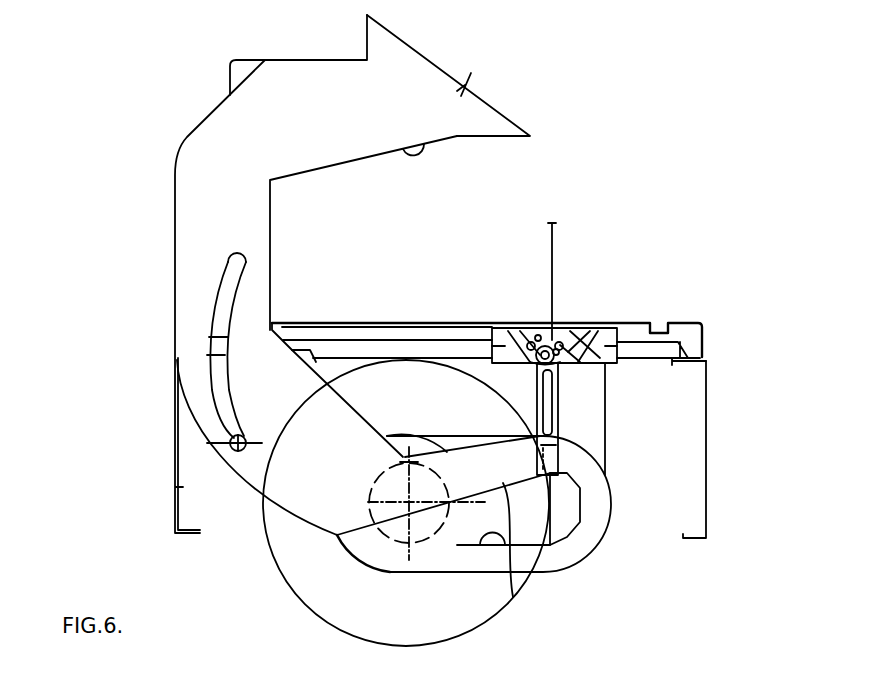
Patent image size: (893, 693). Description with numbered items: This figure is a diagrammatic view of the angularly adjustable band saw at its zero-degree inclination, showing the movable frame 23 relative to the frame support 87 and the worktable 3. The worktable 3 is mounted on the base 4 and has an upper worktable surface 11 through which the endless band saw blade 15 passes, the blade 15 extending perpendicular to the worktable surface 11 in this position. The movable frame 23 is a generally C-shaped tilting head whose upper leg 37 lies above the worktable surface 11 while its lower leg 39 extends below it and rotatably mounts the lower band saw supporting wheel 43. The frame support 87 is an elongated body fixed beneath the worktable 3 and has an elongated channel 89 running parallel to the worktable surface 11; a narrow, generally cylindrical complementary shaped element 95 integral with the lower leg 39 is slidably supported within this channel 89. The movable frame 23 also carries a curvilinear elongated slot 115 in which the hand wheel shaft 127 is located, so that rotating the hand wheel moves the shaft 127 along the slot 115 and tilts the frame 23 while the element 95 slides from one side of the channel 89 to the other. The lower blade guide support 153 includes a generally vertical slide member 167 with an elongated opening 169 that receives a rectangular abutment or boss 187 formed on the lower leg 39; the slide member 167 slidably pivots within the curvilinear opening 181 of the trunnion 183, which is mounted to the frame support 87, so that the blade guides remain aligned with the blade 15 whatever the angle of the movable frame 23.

The worktable 3 is at (706, 334).
The base 4 is at (709, 472).
The worktable surface 11 is at (645, 322).
The endless band saw blade 15 is at (553, 233).
The movable frame 23 is at (213, 157).
The upper leg 37 is at (438, 105).
The lower leg 39 is at (507, 479).
The lower band saw supporting wheel 43 is at (453, 622).
The frame support 87 is at (584, 546).
The elongated channel 89 is at (513, 597).
The complementary shaped element 95 is at (405, 512).
The curvilinear elongated slot 115 is at (225, 272).
The hand wheel shaft 127 is at (207, 443).
The lower blade guide support 153 is at (543, 319).
The slide member 167 is at (559, 418).
The elongated opening 169 is at (545, 405).
The curvilinear opening 181 is at (582, 335).
The trunnion 183 is at (603, 350).
The abutment or boss 187 is at (554, 446).